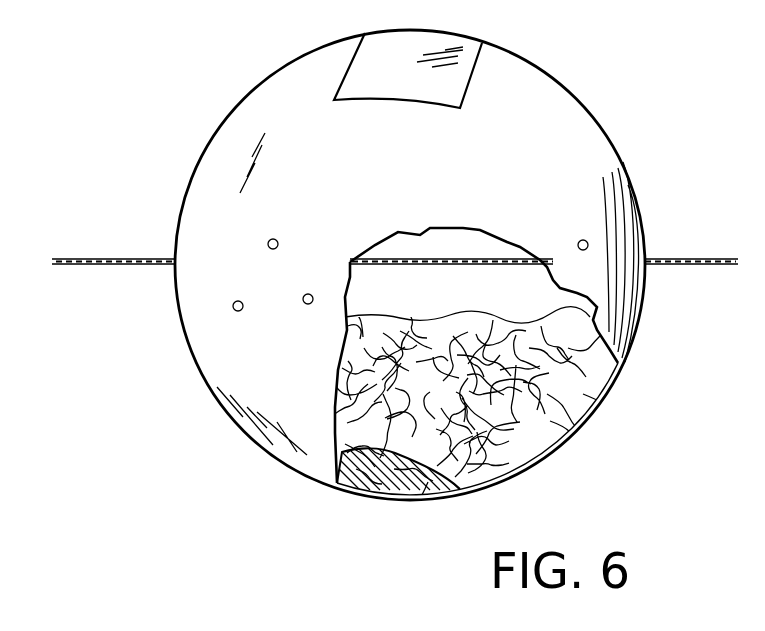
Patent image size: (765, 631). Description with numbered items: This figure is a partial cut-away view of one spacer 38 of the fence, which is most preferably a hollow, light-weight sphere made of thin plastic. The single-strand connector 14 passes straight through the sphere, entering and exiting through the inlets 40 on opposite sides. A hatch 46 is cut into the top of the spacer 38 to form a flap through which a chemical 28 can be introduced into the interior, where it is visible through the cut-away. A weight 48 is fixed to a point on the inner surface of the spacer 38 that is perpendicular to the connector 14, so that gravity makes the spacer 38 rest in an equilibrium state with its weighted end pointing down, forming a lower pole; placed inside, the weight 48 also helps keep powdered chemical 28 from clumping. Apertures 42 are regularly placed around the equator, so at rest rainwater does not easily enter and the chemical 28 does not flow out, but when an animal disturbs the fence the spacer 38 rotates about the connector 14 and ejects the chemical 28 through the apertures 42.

The single-strand connector 14 is at (678, 258).
The chemical 28 is at (567, 405).
The spacer 38 is at (582, 117).
The inlet 40 is at (645, 262).
The apertures 42 is at (304, 304).
The hatch 46 is at (437, 42).
The weight 48 is at (388, 496).